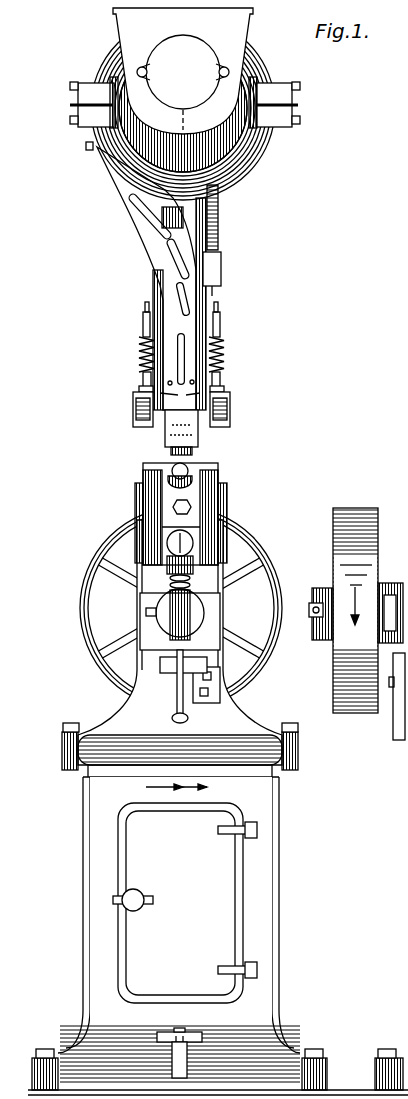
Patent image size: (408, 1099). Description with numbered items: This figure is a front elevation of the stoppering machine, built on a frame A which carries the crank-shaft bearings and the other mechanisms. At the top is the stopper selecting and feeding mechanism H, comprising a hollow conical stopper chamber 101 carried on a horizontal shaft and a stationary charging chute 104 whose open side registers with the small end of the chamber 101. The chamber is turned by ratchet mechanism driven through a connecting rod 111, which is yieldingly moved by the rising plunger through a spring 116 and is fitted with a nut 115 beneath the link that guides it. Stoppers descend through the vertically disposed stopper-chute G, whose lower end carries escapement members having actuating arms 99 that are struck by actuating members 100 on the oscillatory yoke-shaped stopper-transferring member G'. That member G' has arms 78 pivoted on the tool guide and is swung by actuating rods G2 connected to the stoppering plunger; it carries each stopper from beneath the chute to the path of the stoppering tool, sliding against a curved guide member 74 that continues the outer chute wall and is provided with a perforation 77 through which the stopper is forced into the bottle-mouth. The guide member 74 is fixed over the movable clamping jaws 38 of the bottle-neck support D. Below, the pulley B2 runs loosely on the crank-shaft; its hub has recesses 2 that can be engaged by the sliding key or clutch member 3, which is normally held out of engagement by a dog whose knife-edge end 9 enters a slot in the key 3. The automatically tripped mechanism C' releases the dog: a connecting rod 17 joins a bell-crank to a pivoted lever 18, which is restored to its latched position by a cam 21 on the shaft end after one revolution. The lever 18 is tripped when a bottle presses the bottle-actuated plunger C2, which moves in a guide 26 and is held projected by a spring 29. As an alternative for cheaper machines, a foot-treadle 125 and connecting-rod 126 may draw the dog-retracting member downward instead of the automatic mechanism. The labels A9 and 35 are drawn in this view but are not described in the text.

The stationary charging chute 104 is at (125, 22).
The rotary stopper chamber H is at (185, 82).
The cam 21 is at (228, 34).
The hollow stopper chamber 101 is at (270, 147).
The connecting rod 111 is at (208, 204).
The spring 116 is at (219, 229).
The nut 115 is at (222, 280).
The bracket A9 is at (187, 217).
The stopper-chute G is at (140, 278).
The actuating rods G2 is at (207, 327).
The actuating arms 99 is at (141, 359).
The actuating members 100 is at (143, 385).
The arms 78 is at (135, 408).
The curved guide member 74 is at (207, 432).
The oscillatory yoke-shaped stopper-transferring member G' is at (138, 418).
The bottle-neck support D is at (147, 463).
The movable clamping jaws 38 is at (200, 455).
The perforation 77 is at (166, 478).
The nut 35 is at (188, 518).
The spring 29 is at (205, 575).
The bottle-actuated plunger C2 is at (160, 546).
The lever 18 is at (157, 641).
The guide 26 is at (205, 610).
The automatically tripped mechanism C' is at (175, 642).
The connecting rod 17 is at (187, 713).
The pulley B2 is at (358, 510).
The knife-edge end 9 is at (400, 643).
The sliding key or clutch member 3 is at (400, 660).
The recesses 2 is at (387, 592).
The connecting-rod 126 is at (407, 816).
The foot-treadle 125 is at (180, 1032).
The frame A is at (218, 936).